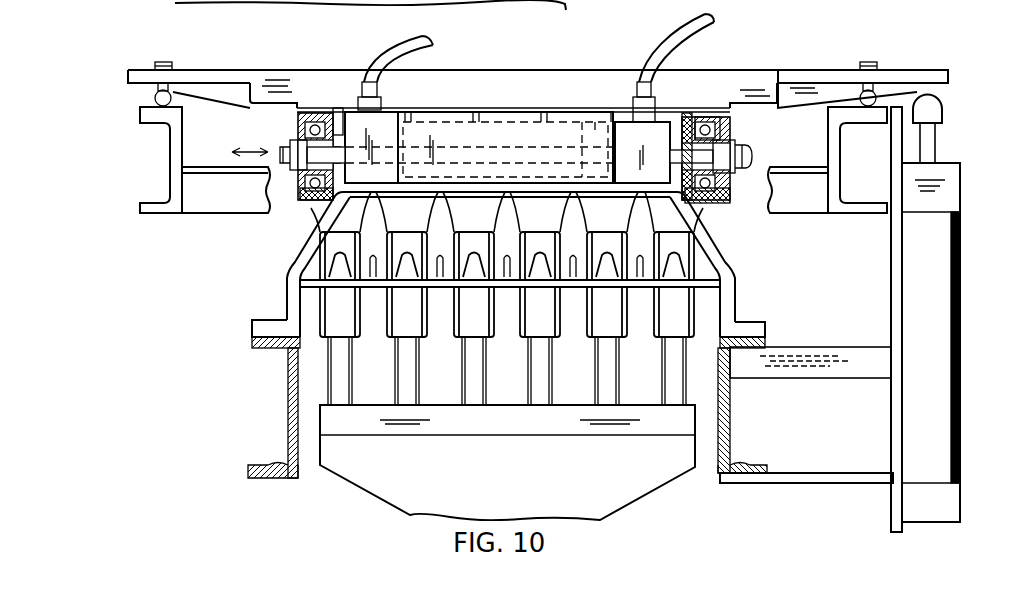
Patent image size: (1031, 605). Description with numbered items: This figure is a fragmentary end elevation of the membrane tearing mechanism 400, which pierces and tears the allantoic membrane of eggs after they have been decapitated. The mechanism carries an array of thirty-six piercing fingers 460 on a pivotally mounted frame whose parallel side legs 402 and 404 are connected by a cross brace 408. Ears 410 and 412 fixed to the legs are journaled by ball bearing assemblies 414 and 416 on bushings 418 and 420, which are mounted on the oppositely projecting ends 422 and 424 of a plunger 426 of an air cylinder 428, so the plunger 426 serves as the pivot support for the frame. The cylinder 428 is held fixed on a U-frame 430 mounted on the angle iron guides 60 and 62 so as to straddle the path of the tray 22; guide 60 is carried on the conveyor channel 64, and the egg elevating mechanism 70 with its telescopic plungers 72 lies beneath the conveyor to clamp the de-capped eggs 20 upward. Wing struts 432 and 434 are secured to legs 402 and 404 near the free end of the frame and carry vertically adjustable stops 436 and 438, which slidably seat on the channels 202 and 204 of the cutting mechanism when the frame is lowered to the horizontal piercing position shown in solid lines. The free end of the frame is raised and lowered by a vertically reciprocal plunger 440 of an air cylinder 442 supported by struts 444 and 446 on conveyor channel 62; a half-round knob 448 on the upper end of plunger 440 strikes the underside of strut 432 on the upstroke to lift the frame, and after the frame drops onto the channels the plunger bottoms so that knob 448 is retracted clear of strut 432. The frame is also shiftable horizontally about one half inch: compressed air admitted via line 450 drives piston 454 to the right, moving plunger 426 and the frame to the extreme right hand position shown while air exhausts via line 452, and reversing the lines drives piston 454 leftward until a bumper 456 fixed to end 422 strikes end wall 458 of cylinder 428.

The membrane tearing mechanism 400 is at (806, 48).
The wing strut 432 is at (950, 78).
The wing strut 434 is at (128, 78).
The vertically adjustable stop 438 is at (152, 100).
The vertically adjustable stop 436 is at (874, 100).
The cross brace 408 is at (298, 82).
The side leg 402 is at (777, 108).
The side leg 404 is at (252, 110).
The bushing 420 is at (335, 108).
The air line 450 is at (432, 44).
The air line 452 is at (700, 36).
The piercing fingers 460 is at (417, 115).
The plunger 426 is at (462, 145).
The air cylinder 428 is at (563, 118).
The piston 454 is at (600, 116).
The end wall 458 is at (672, 135).
The ball bearing assembly 416 is at (300, 131).
The ear 412 is at (298, 200).
The bushing 418 is at (703, 115).
The ball bearing assembly 414 is at (724, 127).
The bumper 456 is at (690, 135).
The ear 410 is at (720, 207).
The plunger end 424 is at (270, 174).
The longitudinal channel 204 is at (168, 213).
The plunger end 422 is at (768, 188).
The longitudinal channel 202 is at (885, 213).
The U-frame 430 is at (287, 297).
The eggs 20 is at (458, 218).
The angle iron guide 60 is at (300, 317).
The tray 22 is at (738, 272).
The telescopic plungers 72 is at (392, 382).
The egg elevating mechanism 70 is at (658, 493).
The conveyor channel 64 is at (288, 398).
The angle iron guide 62 is at (720, 310).
The strut 446 is at (836, 380).
The strut 444 is at (800, 484).
The air cylinder 442 is at (961, 300).
The half-round knob 448 is at (944, 108).
The plunger 440 is at (936, 146).